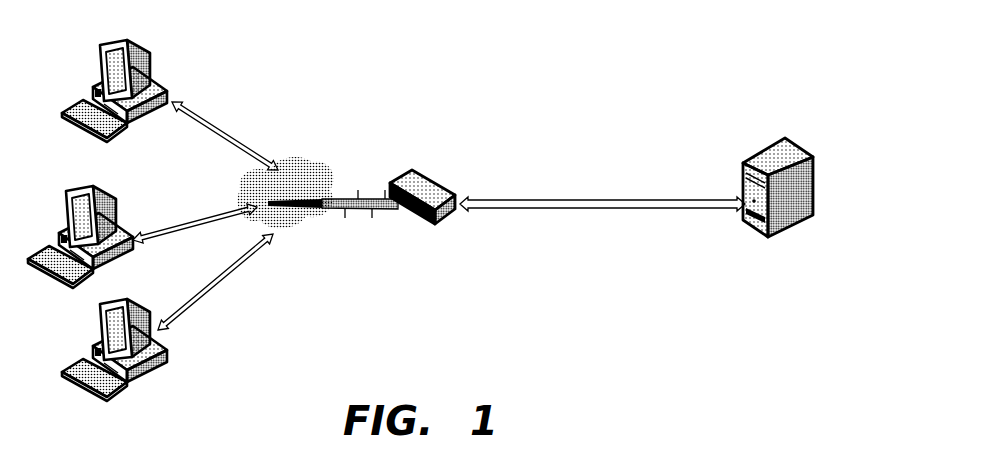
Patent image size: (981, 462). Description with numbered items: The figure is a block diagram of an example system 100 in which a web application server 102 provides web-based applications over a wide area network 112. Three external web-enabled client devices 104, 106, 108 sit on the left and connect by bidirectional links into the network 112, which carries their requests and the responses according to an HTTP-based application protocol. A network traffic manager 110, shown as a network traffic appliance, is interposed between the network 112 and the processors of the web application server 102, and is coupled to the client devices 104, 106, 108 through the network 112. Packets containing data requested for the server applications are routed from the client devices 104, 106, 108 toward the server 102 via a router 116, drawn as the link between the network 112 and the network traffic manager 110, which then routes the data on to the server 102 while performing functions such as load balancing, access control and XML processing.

The system 100 is at (474, 90).
The web application server 102 is at (760, 150).
The web-enabled client device 104 is at (165, 90).
The web-enabled client device 106 is at (119, 200).
The web-enabled client device 108 is at (128, 302).
The network traffic manager 110 is at (422, 176).
The wide area network 112 is at (310, 158).
The router 116 is at (318, 200).